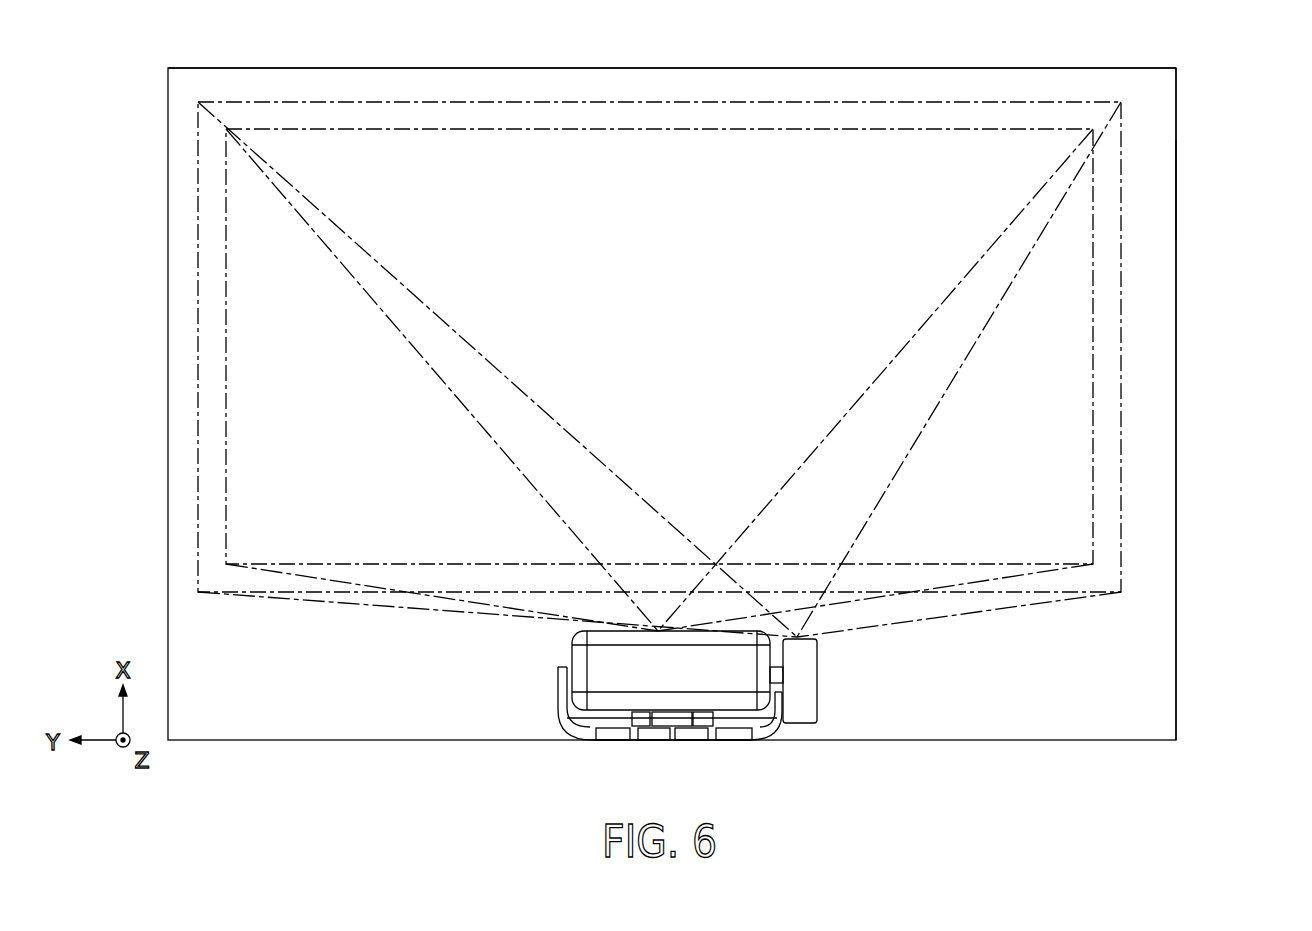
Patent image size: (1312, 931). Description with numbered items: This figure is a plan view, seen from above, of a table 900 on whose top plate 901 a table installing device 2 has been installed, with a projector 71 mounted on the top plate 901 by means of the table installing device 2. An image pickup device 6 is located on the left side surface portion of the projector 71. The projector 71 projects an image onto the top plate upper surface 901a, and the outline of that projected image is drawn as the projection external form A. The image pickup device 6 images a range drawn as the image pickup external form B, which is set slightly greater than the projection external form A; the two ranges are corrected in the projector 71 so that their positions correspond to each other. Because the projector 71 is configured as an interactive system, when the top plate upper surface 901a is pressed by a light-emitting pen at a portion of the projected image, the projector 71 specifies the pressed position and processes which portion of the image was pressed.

The table 900 is at (1190, 413).
The top plate 901 is at (1176, 290).
The top plate upper surface 901a is at (1166, 188).
The projection external form A is at (786, 128).
The image pickup external form B is at (878, 100).
The table installing device 2 is at (684, 722).
The projector 71 is at (600, 663).
The image pickup device 6 is at (807, 675).